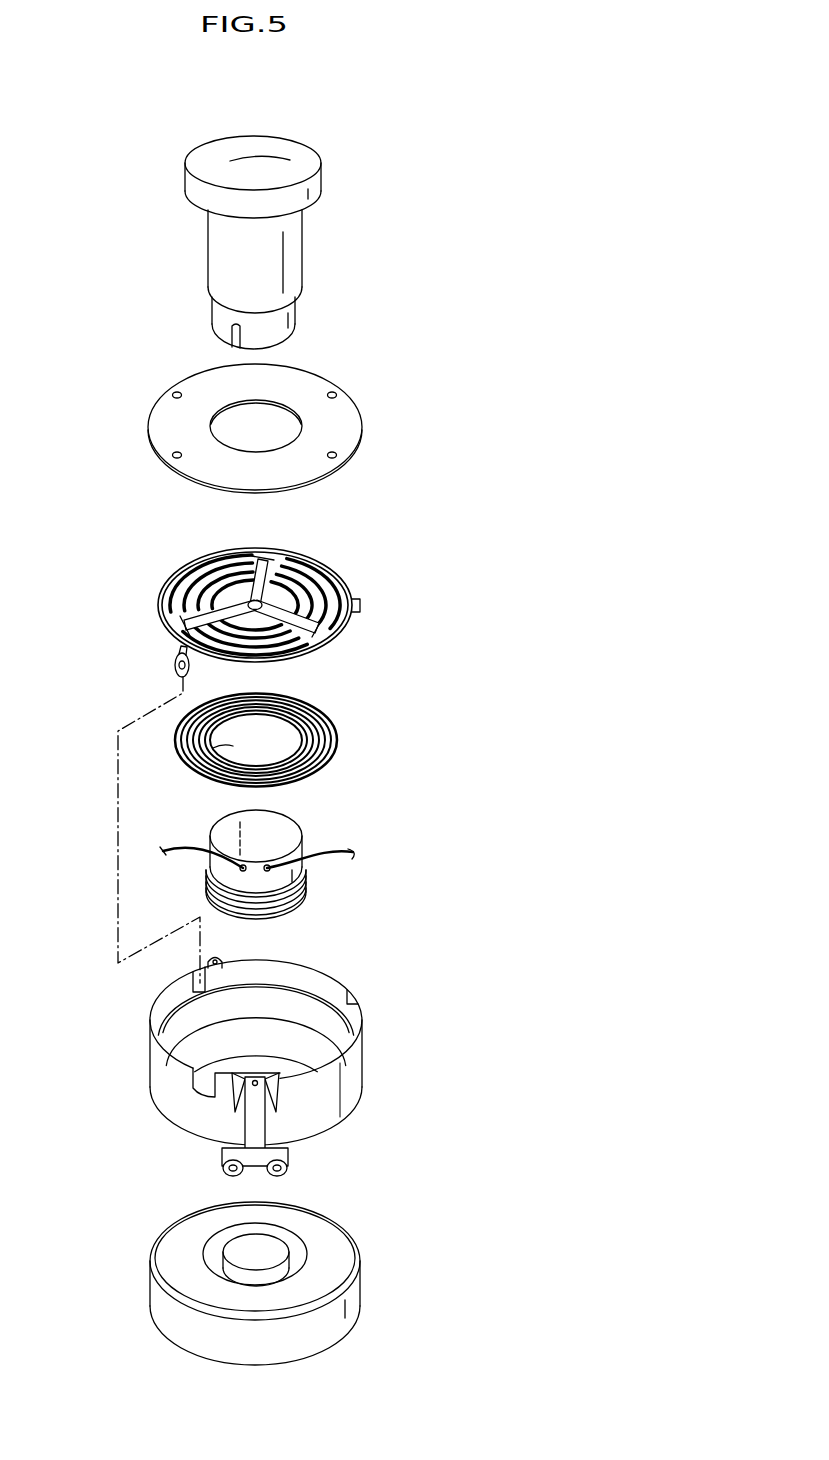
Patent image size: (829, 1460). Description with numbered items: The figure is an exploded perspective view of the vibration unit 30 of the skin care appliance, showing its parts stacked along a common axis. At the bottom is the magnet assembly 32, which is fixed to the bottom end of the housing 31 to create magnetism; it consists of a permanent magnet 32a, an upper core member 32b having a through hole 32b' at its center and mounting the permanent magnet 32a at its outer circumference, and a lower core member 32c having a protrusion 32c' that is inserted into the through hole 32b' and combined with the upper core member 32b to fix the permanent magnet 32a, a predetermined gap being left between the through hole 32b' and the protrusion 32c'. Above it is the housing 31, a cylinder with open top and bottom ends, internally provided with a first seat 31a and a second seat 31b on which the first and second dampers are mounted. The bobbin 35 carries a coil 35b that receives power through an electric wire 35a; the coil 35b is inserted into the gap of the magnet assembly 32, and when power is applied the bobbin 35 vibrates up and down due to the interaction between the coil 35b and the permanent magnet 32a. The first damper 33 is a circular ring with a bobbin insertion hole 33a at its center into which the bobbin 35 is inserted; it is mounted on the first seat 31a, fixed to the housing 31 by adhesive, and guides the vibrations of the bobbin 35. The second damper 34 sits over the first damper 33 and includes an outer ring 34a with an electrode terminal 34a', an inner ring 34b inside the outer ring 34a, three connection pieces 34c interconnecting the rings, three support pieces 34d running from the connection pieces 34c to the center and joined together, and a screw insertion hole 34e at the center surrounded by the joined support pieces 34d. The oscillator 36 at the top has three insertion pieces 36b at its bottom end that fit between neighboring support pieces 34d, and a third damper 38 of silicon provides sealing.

The vibration unit 30 is at (267, 117).
The oscillator 36 is at (302, 252).
The insertion pieces 36b is at (293, 320).
The third damper 38 is at (345, 425).
The second damper 34 is at (260, 595).
The outer ring 34a is at (264, 593).
The electrode terminal 34a' is at (141, 661).
The inner ring 34b is at (278, 630).
The connection pieces 34c is at (250, 562).
The support pieces 34d is at (190, 572).
The screw insertion hole 34e is at (250, 601).
The first damper 33 is at (268, 751).
The bobbin insertion hole 33a is at (203, 768).
The bobbin 35 is at (280, 853).
The electric wire 35a is at (343, 843).
The coil 35b is at (303, 892).
The housing 31 is at (253, 1055).
The first seat 31a is at (318, 1023).
The second seat 31b is at (313, 990).
The magnet assembly 32 is at (245, 1273).
The permanent magnet 32a is at (177, 1323).
The upper core member 32b is at (311, 1254).
The through hole 32b' is at (361, 1275).
The lower core member 32c is at (276, 1339).
The protrusion 32c' is at (300, 1230).